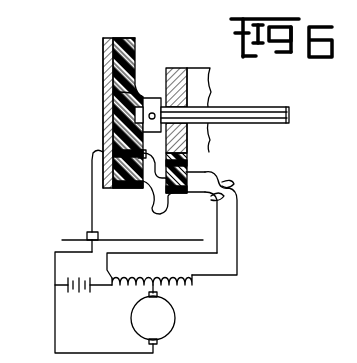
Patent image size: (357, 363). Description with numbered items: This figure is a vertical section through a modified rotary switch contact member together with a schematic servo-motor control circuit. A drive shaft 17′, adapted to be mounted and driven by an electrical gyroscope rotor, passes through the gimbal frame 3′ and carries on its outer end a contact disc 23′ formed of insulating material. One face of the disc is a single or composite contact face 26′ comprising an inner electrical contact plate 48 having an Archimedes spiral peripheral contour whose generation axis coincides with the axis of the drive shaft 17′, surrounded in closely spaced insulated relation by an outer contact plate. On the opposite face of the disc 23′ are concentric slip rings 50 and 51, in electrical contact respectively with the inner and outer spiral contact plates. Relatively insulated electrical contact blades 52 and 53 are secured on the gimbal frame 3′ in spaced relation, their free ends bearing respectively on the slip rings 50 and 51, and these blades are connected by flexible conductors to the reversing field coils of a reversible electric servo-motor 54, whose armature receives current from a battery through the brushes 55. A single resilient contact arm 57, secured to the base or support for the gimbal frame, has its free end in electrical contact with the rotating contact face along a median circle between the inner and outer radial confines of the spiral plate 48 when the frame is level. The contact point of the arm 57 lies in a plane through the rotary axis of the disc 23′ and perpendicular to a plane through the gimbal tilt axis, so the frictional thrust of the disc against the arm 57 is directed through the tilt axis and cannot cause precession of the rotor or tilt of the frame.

The contact disc 23′ is at (98, 66).
The contact face 26′ is at (103, 99).
The slip ring 51 is at (136, 52).
The slip ring 50 is at (138, 95).
The inner electrical contact plate 48 is at (103, 143).
The gimbal frame 3′ is at (198, 66).
The drive shaft 17′ is at (264, 124).
The electrical contact blade 52 is at (150, 160).
The electrical contact blade 53 is at (152, 204).
The resilient contact arm 57 is at (92, 189).
The brushes 55 is at (158, 291).
The reversible electric servo-motor 54 is at (131, 318).